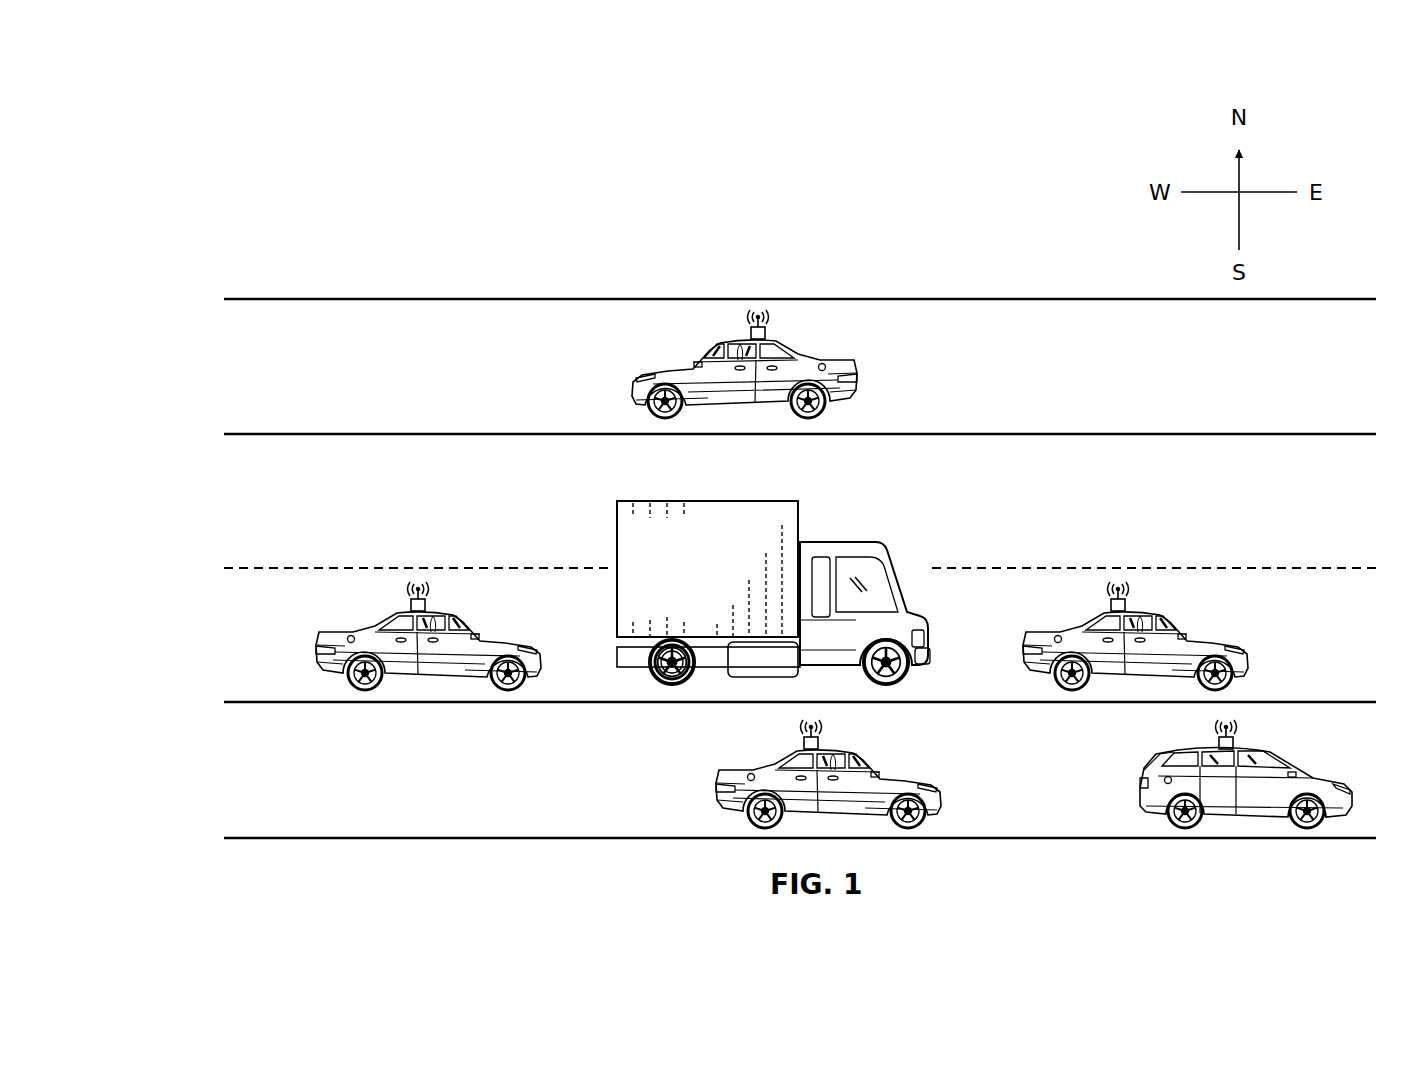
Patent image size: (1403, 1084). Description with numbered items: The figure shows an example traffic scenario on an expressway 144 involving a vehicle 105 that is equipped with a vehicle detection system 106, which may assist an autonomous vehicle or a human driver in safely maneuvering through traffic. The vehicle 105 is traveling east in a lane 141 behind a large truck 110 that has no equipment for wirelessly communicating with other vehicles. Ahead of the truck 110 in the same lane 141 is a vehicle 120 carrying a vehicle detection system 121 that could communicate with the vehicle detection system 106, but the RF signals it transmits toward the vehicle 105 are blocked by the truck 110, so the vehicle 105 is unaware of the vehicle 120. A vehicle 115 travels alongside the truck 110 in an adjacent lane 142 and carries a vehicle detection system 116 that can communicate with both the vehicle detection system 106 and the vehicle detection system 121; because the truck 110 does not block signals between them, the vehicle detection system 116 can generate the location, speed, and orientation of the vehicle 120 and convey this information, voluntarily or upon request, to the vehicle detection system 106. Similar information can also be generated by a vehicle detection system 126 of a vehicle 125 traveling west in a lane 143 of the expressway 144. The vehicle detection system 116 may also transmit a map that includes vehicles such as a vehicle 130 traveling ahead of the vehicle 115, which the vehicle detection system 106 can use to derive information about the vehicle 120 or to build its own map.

The vehicle 105 is at (409, 636).
The vehicle detection system 106 is at (430, 609).
The truck 110 is at (634, 488).
The vehicle 115 is at (809, 774).
The vehicle detection system 116 is at (824, 749).
The vehicle 120 is at (1114, 636).
The vehicle detection system 121 is at (1130, 609).
The vehicle 125 is at (724, 364).
The vehicle detection system 126 is at (770, 334).
The vehicle 130 is at (1144, 757).
The lane 141 is at (216, 638).
The lane 142 is at (228, 778).
The lane 143 is at (216, 382).
The expressway 144 is at (392, 276).